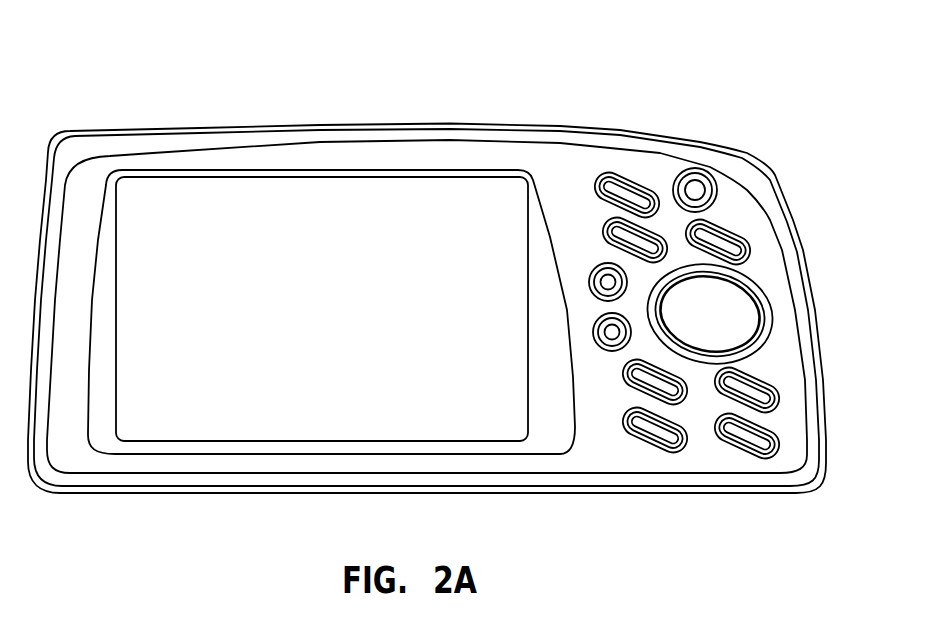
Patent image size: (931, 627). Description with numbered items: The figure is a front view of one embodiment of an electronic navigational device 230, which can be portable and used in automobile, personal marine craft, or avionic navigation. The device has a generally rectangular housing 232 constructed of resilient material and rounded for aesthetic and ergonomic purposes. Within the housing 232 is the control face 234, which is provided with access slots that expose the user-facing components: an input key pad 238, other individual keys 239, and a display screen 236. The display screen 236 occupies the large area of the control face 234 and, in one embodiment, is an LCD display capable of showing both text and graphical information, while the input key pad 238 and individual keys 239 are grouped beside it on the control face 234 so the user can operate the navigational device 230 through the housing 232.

The electronic navigational device 230 is at (630, 87).
The housing 232 is at (278, 123).
The control face 234 is at (399, 154).
The display screen 236 is at (202, 430).
The input key pad 238 is at (743, 322).
The individual keys 239 is at (722, 243).